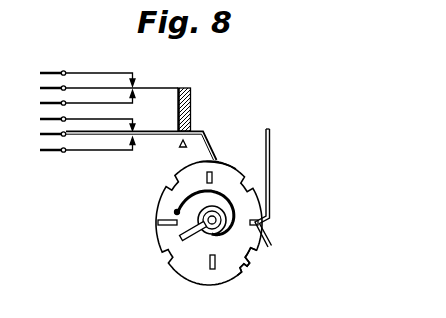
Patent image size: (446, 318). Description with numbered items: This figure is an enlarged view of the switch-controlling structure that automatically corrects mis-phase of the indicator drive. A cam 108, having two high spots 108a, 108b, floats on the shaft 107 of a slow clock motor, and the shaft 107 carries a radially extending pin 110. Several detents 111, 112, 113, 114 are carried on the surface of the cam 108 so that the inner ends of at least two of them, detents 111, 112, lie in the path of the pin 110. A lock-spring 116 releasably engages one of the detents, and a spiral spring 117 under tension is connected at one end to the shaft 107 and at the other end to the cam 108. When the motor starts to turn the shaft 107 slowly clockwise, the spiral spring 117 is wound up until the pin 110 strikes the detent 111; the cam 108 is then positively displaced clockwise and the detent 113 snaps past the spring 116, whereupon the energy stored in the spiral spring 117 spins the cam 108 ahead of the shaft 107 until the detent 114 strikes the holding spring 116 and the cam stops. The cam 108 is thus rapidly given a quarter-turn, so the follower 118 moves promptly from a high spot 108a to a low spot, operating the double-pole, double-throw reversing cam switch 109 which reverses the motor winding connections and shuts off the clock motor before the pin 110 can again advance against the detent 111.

The shaft 107 is at (222, 216).
The cam 108 is at (165, 205).
The high spot 108a is at (223, 159).
The high spot 108b is at (243, 273).
The reversing cam switch 109 is at (191, 90).
The pin 110 is at (206, 222).
The detent 111 is at (163, 223).
The detent 112 is at (208, 268).
The detent 113 is at (270, 220).
The detent 114 is at (214, 177).
The lock-spring 116 is at (267, 235).
The spiral spring 117 is at (183, 199).
The follower 118 is at (207, 141).